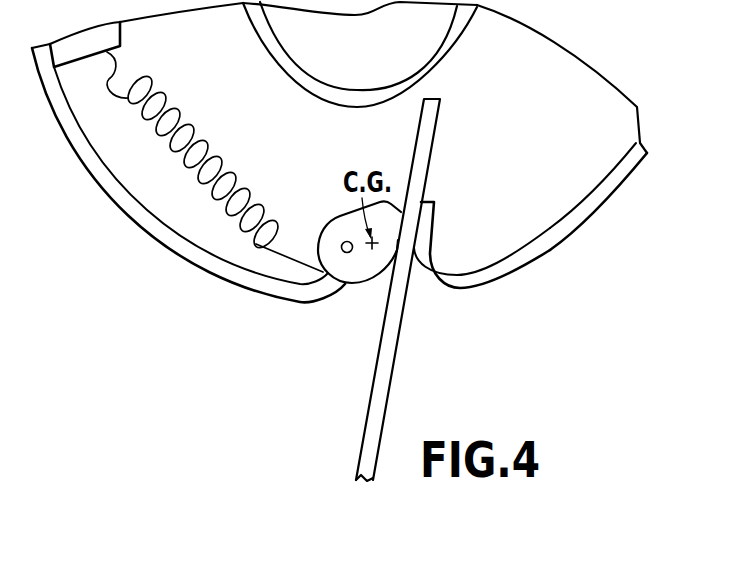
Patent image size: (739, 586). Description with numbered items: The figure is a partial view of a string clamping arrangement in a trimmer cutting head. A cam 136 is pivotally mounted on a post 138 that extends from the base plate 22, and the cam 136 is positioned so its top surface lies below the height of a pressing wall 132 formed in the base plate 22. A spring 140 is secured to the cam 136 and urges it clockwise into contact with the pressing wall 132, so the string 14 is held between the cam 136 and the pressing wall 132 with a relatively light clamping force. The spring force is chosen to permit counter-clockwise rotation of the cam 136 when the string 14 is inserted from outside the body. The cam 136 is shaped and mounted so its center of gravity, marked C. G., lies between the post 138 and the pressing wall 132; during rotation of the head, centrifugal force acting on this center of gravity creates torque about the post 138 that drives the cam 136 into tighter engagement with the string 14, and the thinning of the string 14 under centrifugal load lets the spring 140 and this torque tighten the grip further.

The base plate 22 is at (562, 68).
The string 14 is at (362, 433).
The pressing wall 132 is at (432, 232).
The cam 136 is at (357, 283).
The post 138 is at (341, 248).
The spring 140 is at (170, 157).